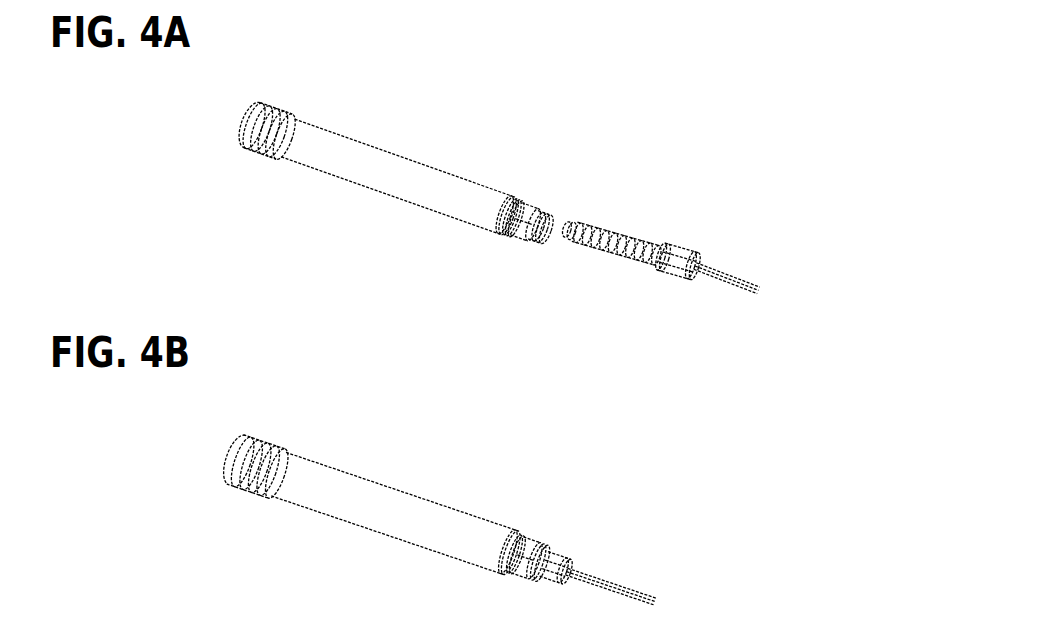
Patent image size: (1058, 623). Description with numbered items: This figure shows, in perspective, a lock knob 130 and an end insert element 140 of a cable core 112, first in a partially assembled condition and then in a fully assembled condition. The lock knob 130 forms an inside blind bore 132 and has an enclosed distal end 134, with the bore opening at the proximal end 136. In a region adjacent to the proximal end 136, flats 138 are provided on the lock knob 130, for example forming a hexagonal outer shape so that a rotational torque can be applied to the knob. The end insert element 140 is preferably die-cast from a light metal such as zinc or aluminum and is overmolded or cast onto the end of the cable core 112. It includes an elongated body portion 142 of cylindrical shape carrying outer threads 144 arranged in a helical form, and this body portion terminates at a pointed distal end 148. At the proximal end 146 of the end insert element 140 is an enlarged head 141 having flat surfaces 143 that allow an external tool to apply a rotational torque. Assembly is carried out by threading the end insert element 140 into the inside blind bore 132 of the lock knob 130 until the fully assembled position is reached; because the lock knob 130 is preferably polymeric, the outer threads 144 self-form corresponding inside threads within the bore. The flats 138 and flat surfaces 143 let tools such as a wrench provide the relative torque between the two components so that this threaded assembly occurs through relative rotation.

In FIG. 4A, the cable core 112 is at (750, 282).
In FIG. 4B, the cable core 112 is at (633, 583).
In FIG. 4A, the lock knob 130 is at (345, 148).
In FIG. 4B, the lock knob 130 is at (383, 497).
In FIG. 4A, the inside blind bore 132 is at (533, 213).
In FIG. 4A, the enclosed distal end 134 is at (248, 125).
In FIG. 4A, the proximal end 136 is at (530, 232).
In FIG. 4A, the flats 138 is at (527, 207).
In FIG. 4A, the end insert element 140 is at (674, 262).
In FIG. 4B, the end insert element 140 is at (553, 555).
In FIG. 4A, the enlarged head 141 is at (690, 273).
In FIG. 4A, the elongated body portion 142 is at (625, 250).
In FIG. 4A, the flat surfaces 143 is at (672, 268).
In FIG. 4A, the outer threads 144 is at (647, 240).
In FIG. 4A, the proximal end 146 is at (695, 257).
In FIG. 4A, the pointed distal end 148 is at (562, 232).